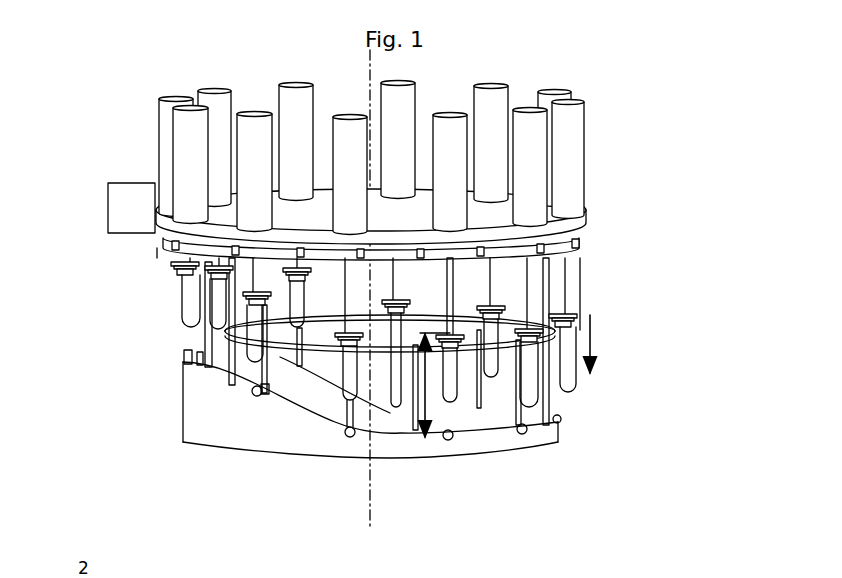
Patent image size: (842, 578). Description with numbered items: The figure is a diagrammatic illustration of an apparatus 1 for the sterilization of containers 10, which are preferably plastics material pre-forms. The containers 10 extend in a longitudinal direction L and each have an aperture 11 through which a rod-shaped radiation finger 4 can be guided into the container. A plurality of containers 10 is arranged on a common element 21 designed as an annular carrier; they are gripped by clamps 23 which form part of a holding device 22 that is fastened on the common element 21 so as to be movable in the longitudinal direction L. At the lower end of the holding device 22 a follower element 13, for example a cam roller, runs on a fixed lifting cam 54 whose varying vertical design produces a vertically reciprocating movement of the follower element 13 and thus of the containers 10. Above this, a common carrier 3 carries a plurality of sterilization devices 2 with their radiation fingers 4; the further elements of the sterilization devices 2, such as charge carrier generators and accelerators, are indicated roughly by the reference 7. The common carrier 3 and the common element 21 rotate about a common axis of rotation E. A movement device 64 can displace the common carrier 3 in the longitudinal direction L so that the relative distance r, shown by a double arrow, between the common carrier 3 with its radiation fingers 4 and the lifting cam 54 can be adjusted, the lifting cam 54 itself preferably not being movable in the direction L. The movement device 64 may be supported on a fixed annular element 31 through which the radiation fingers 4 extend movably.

The apparatus 1 is at (658, 136).
The sterilization device 2 is at (213, 68).
The common carrier 3 is at (588, 222).
The radiation finger 4 is at (566, 268).
The further elements of the sterilization device 7 is at (176, 168).
The container 10 is at (573, 380).
The aperture 11 is at (574, 320).
The follower element 13 is at (252, 384).
The common element 21 is at (316, 345).
The holding device 22 is at (345, 413).
The clamp 23 is at (216, 273).
The annular element 31 is at (157, 253).
The lifting cam 54 is at (182, 402).
The movement device 64 is at (108, 200).
The axis of rotation E is at (370, 73).
The longitudinal direction L is at (598, 348).
The relative distance r is at (424, 380).